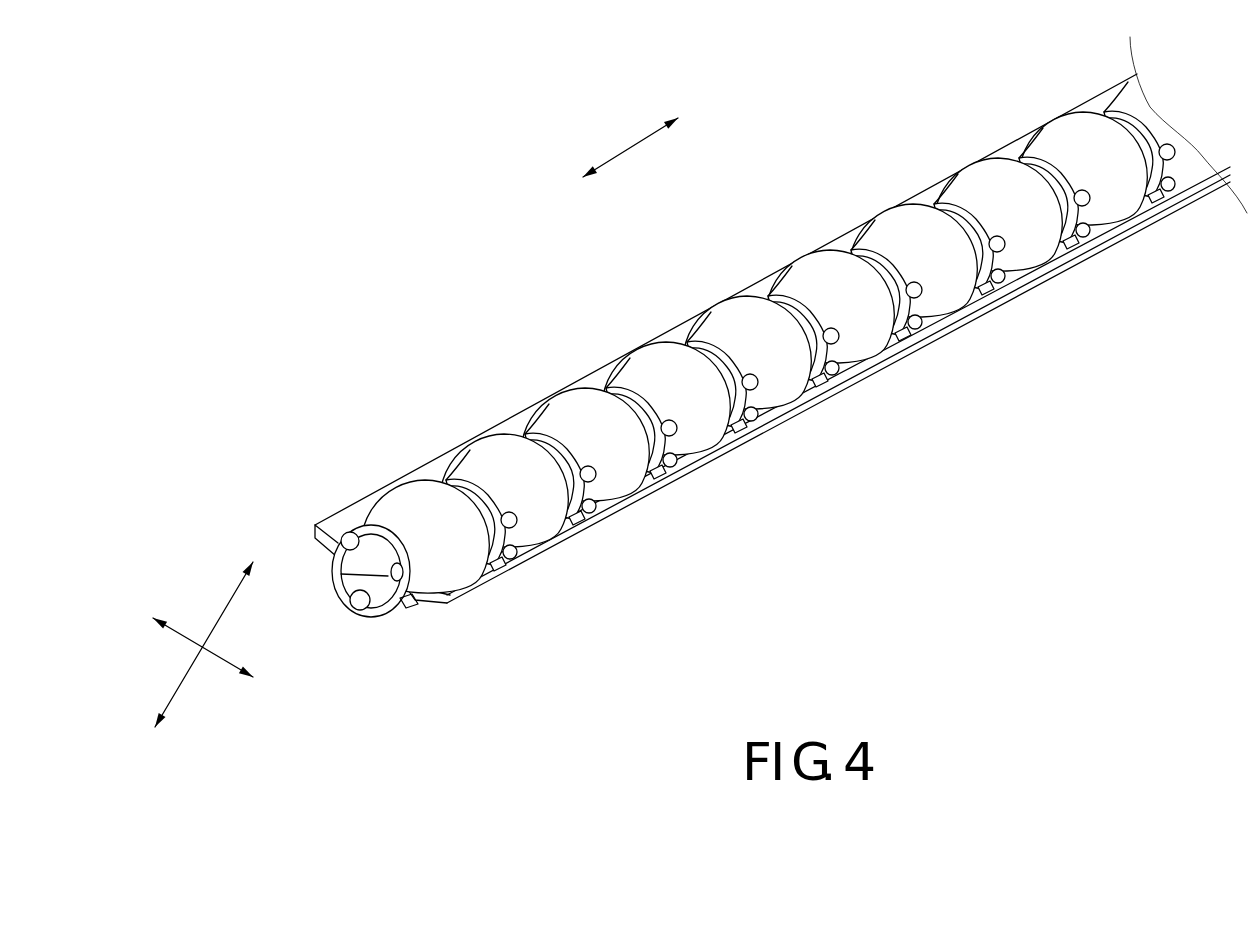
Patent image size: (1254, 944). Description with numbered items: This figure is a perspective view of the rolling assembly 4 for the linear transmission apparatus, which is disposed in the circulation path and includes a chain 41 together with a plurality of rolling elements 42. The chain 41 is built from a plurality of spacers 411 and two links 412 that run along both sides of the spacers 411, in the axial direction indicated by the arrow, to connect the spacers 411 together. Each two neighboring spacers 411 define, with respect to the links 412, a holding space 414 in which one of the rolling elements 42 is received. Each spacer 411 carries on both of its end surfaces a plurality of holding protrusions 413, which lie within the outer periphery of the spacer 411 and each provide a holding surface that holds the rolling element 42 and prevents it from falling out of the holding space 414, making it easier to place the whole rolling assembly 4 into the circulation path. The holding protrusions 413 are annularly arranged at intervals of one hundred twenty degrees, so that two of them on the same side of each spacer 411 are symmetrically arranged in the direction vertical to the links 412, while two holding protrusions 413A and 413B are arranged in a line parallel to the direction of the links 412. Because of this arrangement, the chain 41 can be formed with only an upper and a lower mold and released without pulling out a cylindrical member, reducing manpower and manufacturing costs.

The rolling assembly 4 is at (372, 191).
The chain 41 is at (740, 283).
The rolling elements 42 is at (915, 240).
The spacers 411 is at (408, 530).
The links 412 is at (566, 384).
The holding protrusions 413 is at (387, 588).
The holding protrusion 413A is at (337, 530).
The holding protrusion 413B is at (407, 602).
The holding space 414 is at (486, 580).